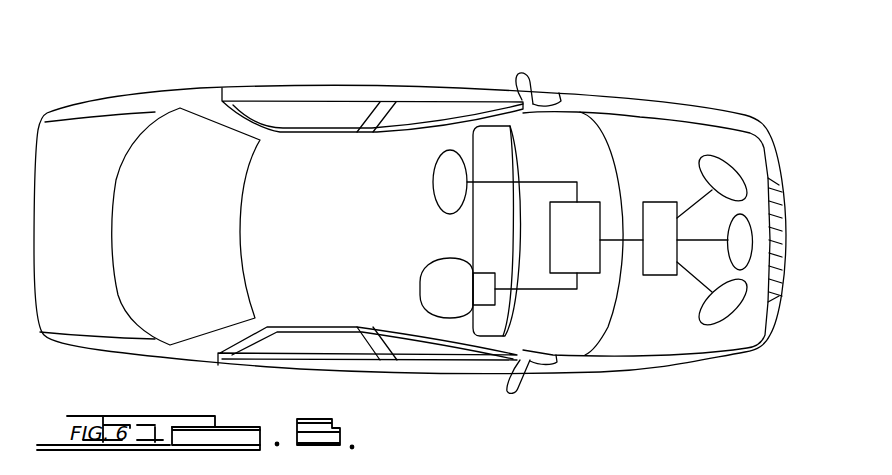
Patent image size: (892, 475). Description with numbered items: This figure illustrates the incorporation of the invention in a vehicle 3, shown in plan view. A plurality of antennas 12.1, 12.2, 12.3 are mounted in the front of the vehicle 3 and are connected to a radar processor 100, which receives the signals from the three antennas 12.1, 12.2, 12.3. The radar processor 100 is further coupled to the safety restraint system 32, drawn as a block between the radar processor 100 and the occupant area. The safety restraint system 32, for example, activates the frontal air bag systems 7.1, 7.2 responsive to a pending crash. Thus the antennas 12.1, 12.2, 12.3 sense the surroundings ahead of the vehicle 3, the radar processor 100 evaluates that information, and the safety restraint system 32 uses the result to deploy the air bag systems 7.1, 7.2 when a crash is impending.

The vehicle 3 is at (198, 95).
The frontal air bag system 7.1 is at (440, 184).
The frontal air bag system 7.2 is at (433, 291).
The safety restraint system 32 is at (588, 268).
The radar processor 100 is at (661, 207).
The antenna 12.1 is at (727, 170).
The antenna 12.2 is at (750, 242).
The antenna 12.3 is at (717, 318).